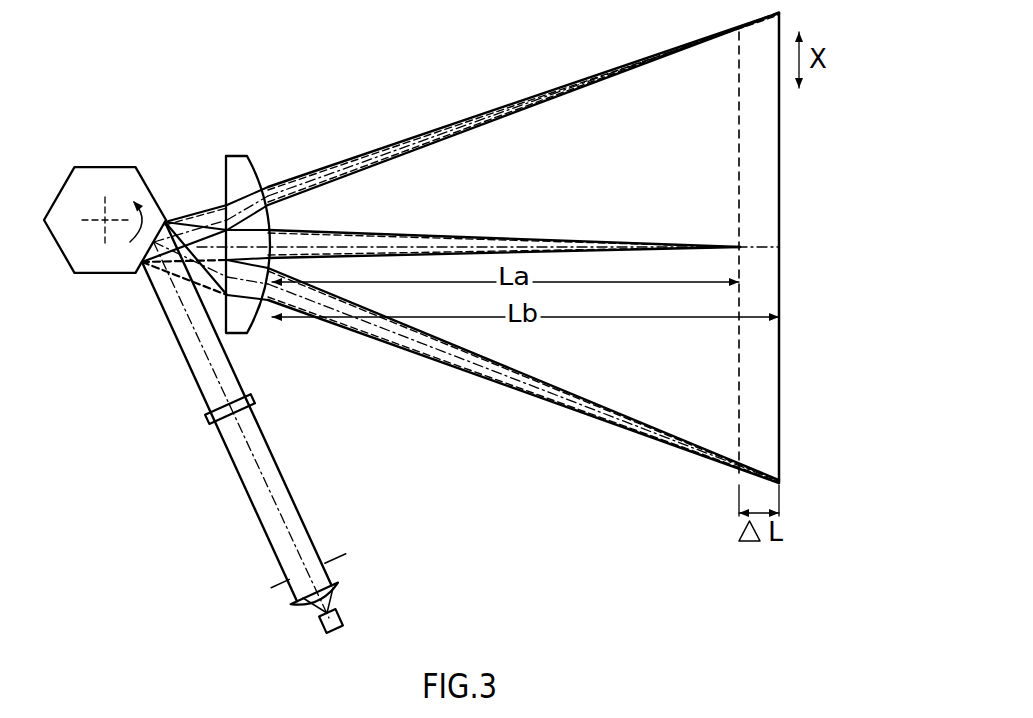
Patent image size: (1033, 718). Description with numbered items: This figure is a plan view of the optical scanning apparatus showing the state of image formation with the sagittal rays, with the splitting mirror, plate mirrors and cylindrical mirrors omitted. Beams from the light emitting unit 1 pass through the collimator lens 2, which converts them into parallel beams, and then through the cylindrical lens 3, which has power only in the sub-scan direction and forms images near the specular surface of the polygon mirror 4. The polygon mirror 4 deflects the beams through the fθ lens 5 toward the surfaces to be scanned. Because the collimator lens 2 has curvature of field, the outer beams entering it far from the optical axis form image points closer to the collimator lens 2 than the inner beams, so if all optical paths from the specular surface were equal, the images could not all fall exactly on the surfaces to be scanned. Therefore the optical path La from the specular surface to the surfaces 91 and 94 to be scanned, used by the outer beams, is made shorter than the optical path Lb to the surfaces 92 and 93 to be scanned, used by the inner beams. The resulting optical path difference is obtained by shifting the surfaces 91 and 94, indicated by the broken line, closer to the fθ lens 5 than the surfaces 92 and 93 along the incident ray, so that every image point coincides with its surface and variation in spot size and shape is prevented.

The light emitting unit 1 is at (344, 622).
The collimator lens 2 is at (344, 587).
The cylindrical lens 3 is at (255, 400).
The polygon mirror 4 is at (137, 273).
The fθ lens 5 is at (236, 166).
The surface to be scanned 91 is at (813, 252).
The surface to be scanned 92 is at (833, 247).
The surface to be scanned 93 is at (780, 383).
The surface to be scanned 94 is at (740, 420).